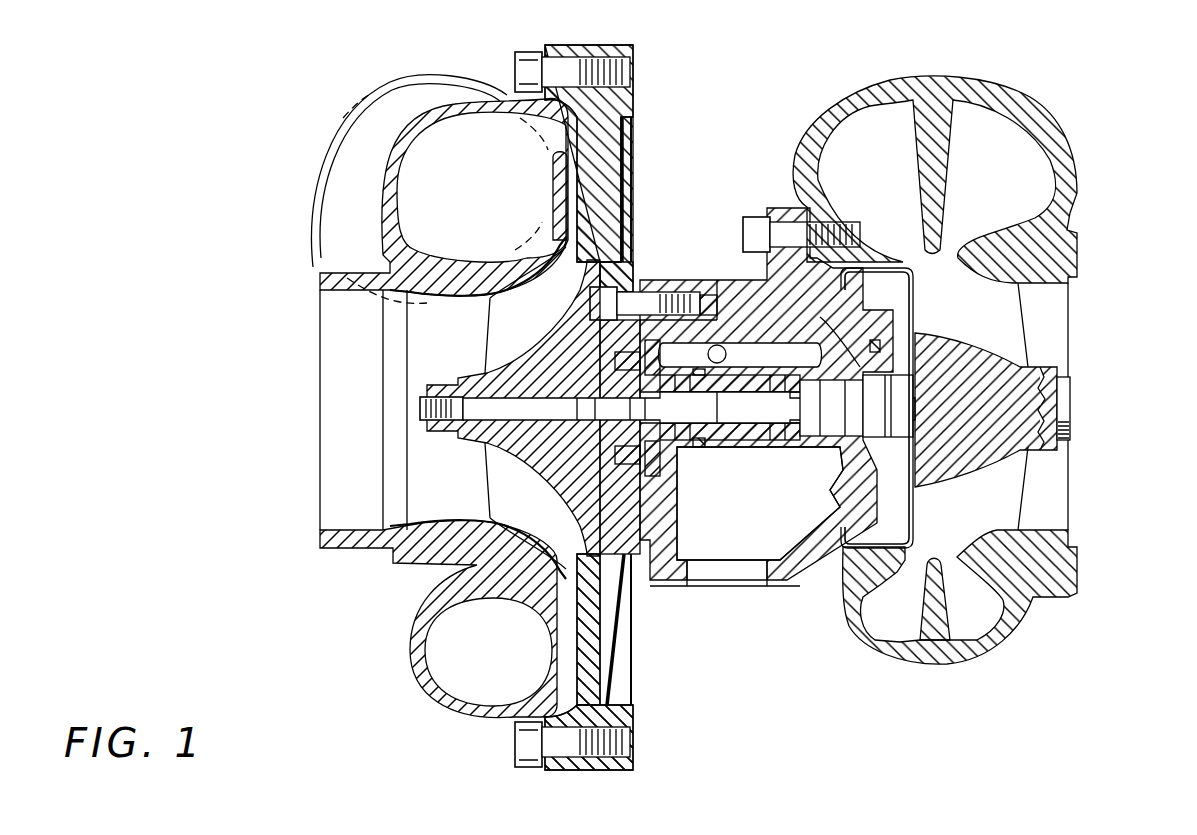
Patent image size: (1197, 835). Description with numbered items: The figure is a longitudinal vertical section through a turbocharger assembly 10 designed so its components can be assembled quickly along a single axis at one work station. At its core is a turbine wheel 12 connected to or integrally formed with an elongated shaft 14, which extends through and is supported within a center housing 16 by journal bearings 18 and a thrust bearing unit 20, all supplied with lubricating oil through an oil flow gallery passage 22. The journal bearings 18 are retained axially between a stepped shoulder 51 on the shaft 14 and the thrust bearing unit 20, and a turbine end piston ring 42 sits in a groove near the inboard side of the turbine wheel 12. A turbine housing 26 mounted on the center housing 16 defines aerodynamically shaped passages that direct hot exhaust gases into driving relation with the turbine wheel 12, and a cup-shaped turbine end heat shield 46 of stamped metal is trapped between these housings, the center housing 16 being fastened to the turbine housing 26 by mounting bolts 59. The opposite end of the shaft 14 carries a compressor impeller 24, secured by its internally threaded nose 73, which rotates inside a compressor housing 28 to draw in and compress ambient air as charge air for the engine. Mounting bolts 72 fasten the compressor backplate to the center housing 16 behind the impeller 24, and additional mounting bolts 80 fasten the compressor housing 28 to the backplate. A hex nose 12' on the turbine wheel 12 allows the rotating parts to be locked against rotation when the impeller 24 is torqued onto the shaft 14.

The turbocharger assembly 10 is at (268, 188).
The turbine wheel 12 is at (1027, 410).
The hex nose 12' is at (1105, 409).
The shaft 14 is at (788, 413).
The center housing 16 is at (760, 310).
The journal bearings 18 is at (708, 440).
The thrust bearing unit 20 is at (638, 460).
The oil flow gallery passage 22 is at (730, 392).
The compressor impeller 24 is at (530, 377).
The turbine housing 26 is at (1010, 650).
The compressor housing 28 is at (432, 636).
The turbine end piston ring 42 is at (893, 463).
The turbine end heat shield 46 is at (913, 307).
The stepped shoulder 51 is at (840, 402).
The mounting bolts 59 is at (758, 210).
The mounting bolts 72 is at (640, 297).
The internally threaded nose 73 is at (450, 424).
The mounting bolts 80 is at (527, 52).